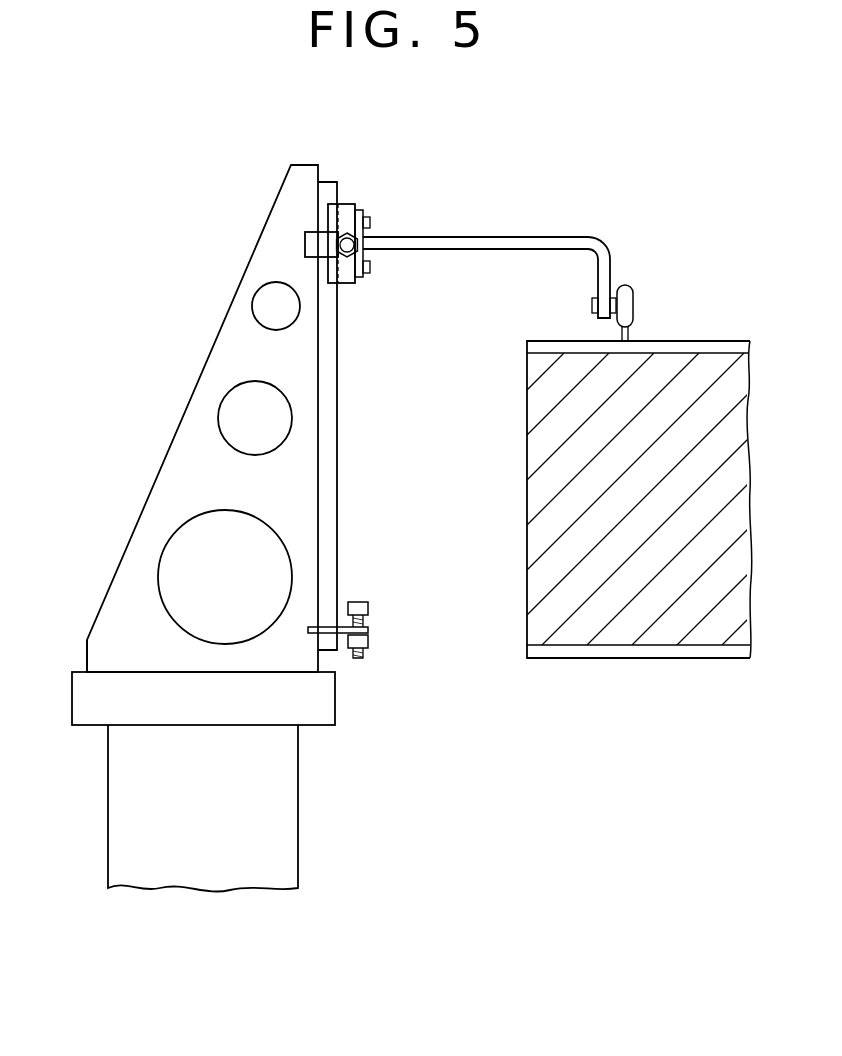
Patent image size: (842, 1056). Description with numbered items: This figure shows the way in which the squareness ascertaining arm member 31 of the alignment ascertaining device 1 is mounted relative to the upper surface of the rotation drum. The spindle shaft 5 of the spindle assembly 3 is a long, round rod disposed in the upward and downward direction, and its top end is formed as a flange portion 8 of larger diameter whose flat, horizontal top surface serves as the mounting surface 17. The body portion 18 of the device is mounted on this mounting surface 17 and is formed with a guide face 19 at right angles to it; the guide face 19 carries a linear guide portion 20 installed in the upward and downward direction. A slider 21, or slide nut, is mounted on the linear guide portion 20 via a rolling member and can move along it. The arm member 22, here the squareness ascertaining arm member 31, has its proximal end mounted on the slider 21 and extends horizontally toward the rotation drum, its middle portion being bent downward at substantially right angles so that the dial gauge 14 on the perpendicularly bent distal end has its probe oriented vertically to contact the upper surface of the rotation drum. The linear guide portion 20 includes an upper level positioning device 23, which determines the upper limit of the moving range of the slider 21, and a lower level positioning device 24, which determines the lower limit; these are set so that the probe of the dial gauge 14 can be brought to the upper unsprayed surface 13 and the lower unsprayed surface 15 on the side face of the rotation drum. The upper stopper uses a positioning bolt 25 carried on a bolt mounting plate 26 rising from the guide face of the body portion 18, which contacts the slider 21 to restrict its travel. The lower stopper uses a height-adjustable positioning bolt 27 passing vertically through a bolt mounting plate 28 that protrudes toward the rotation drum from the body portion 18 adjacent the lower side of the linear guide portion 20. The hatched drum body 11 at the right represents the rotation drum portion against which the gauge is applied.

The alignment ascertaining device 1 is at (520, 164).
The spindle assembly 3 is at (292, 820).
The spindle shaft 5 is at (249, 808).
The flange portion 8 is at (327, 697).
The pressure regulator body 11 is at (545, 388).
The upper unsprayed surface 13 is at (707, 350).
The dial gauge 14 is at (628, 296).
The lower unsprayed surface 15 is at (710, 660).
The mounting surface 17 is at (82, 670).
The body portion 18 is at (175, 470).
The guide face 19 is at (321, 372).
The linear guide portion 20 is at (337, 470).
The slider 21 is at (349, 205).
The arm member 22 is at (550, 243).
The upper level positioning device 23 is at (280, 210).
The lower level positioning device 24 is at (400, 622).
The positioning bolt 25 is at (332, 231).
The bolt mounting plate 26 is at (308, 245).
The positioning bolt 27 is at (368, 606).
The bolt mounting plate 28 is at (368, 632).
The squareness ascertaining arm member 31 is at (504, 250).